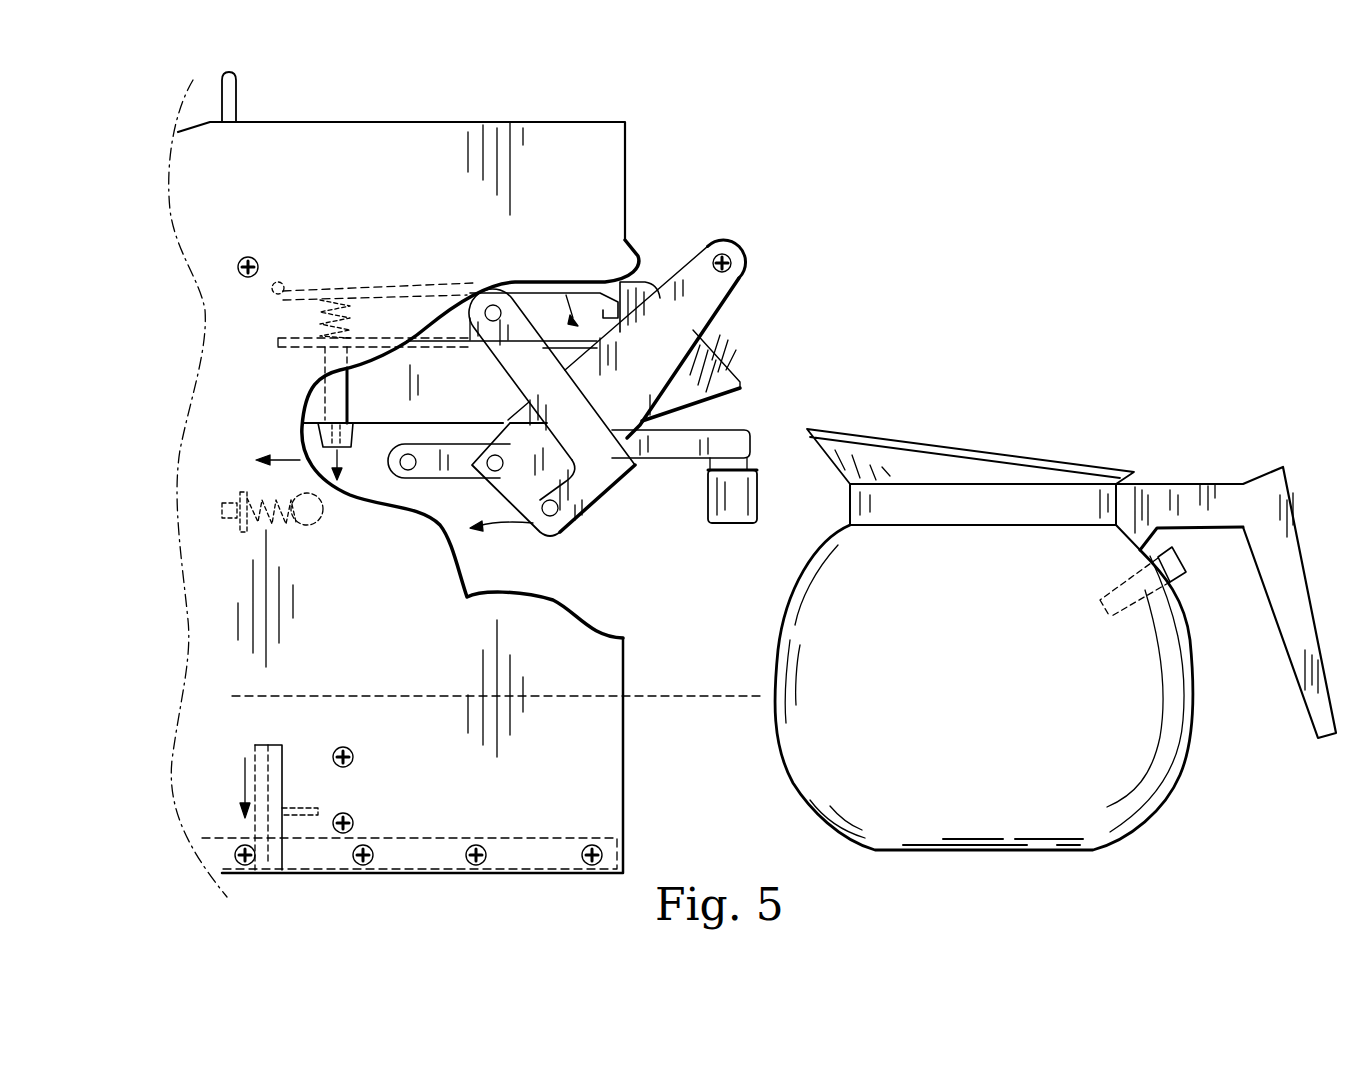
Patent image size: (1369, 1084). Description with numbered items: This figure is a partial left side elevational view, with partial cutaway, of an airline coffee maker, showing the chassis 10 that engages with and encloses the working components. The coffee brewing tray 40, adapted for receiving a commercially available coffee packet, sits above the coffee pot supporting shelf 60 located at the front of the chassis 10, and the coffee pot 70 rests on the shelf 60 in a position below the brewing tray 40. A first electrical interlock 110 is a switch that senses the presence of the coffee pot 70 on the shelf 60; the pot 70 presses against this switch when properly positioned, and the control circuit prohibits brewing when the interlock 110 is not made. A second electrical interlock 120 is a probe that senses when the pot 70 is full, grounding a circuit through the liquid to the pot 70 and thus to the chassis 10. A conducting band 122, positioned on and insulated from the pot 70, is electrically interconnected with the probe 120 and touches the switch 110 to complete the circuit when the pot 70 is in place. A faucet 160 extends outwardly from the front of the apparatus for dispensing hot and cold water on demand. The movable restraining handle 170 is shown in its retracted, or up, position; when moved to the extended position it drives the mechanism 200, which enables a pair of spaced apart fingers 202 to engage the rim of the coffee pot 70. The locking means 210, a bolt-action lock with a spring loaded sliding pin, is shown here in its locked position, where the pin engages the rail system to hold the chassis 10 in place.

The chassis 10 is at (620, 177).
The coffee brewing tray 40 is at (740, 383).
The coffee pot supporting shelf 60 is at (517, 858).
The coffee pot 70 is at (801, 776).
The first electrical interlock 110 is at (300, 523).
The second electrical interlock 120 is at (1180, 577).
The conducting band 122 is at (1009, 495).
The faucet 160 is at (733, 523).
The restraining handle 170 is at (747, 263).
The mechanism 200 is at (623, 473).
The fingers 202 is at (330, 413).
The locking means 210 is at (277, 823).